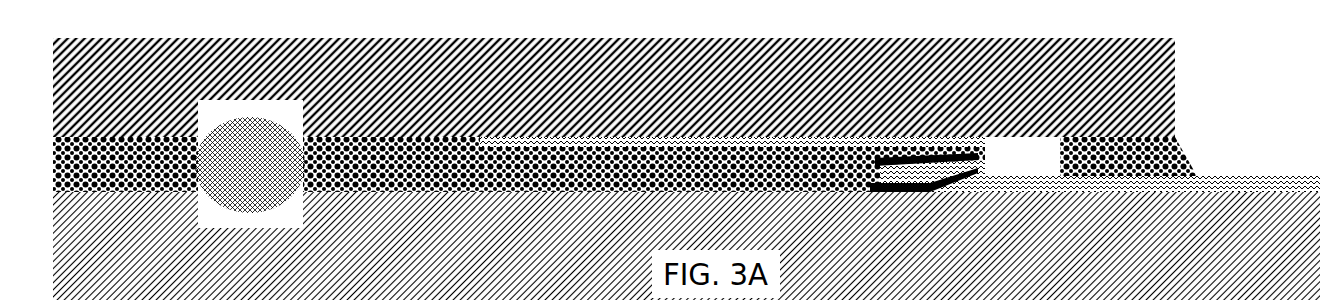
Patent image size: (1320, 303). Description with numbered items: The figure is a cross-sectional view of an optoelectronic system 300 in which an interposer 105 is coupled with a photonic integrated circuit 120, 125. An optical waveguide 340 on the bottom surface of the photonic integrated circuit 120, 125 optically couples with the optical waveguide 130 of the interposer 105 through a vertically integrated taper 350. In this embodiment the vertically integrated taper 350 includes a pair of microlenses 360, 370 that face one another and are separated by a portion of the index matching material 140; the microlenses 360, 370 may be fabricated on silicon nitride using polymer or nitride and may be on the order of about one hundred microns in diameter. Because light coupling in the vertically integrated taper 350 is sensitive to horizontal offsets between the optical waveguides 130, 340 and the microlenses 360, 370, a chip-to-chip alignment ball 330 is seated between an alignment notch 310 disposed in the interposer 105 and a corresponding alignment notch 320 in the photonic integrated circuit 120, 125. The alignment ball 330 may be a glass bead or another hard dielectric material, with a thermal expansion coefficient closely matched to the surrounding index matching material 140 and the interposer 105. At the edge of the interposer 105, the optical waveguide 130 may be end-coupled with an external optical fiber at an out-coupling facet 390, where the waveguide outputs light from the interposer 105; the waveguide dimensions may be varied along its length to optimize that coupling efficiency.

The optoelectronic system 300 is at (686, 168).
The interposer 105 is at (137, 262).
The photonic integrated circuit 120 is at (1085, 89).
The photonic integrated circuit 125 is at (614, 87).
The optical waveguide 130 is at (1198, 174).
The index matching material 140 is at (137, 181).
The alignment notch 310 is at (291, 231).
The alignment notch 320 is at (298, 97).
The chip-to-chip alignment ball 330 is at (263, 181).
The optical waveguide 340 is at (727, 138).
The vertically integrated taper 350 is at (882, 207).
The microlens 360 is at (947, 140).
The microlens 370 is at (976, 169).
The out-coupling facet 390 is at (1100, 160).